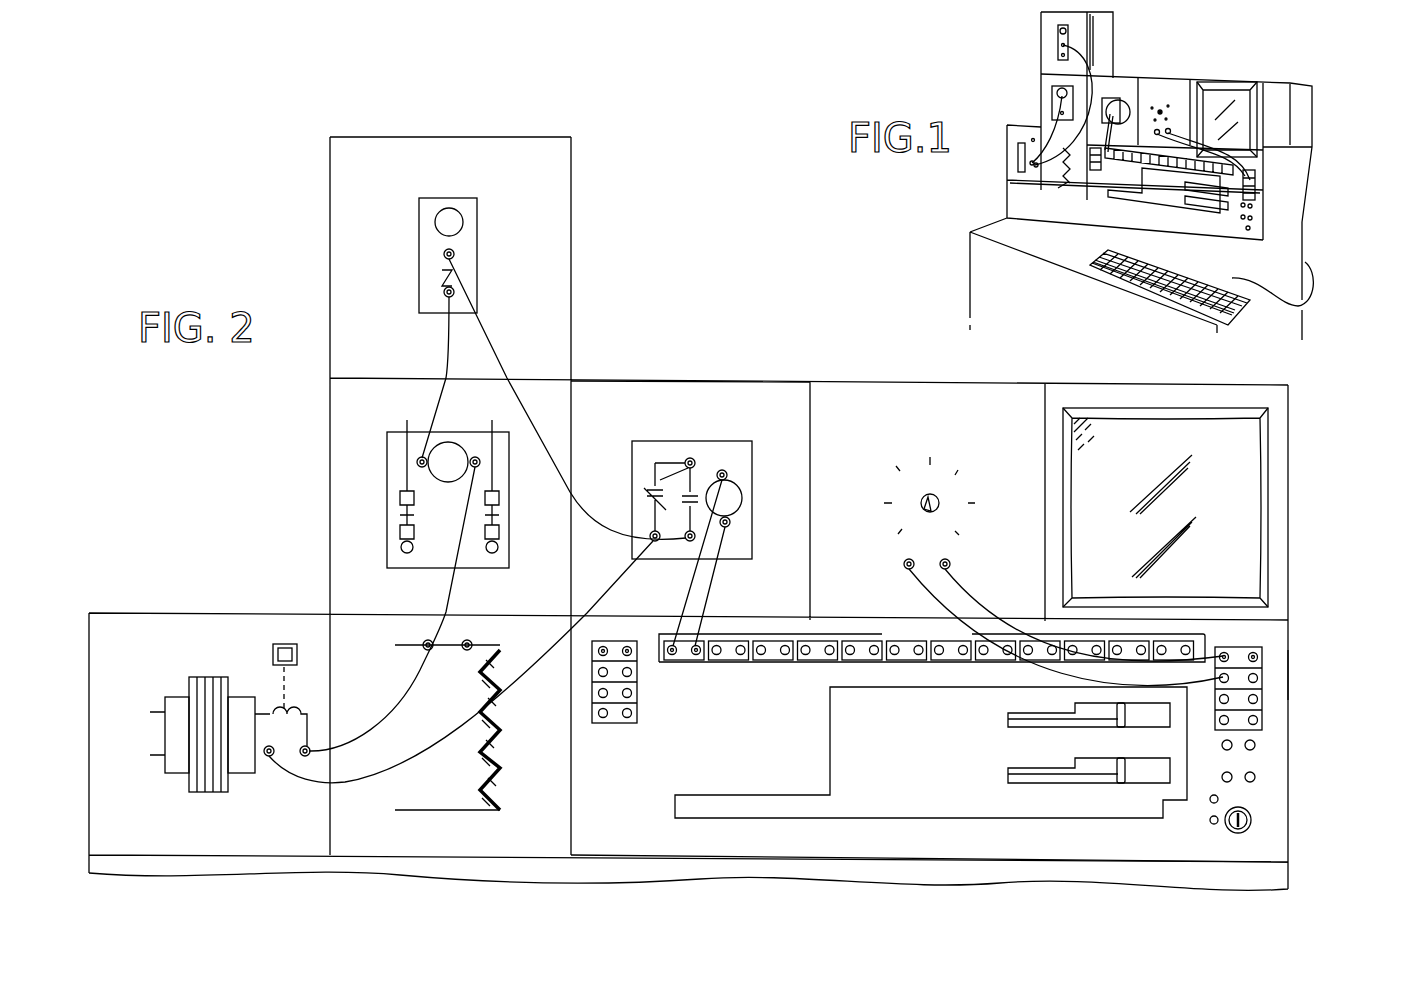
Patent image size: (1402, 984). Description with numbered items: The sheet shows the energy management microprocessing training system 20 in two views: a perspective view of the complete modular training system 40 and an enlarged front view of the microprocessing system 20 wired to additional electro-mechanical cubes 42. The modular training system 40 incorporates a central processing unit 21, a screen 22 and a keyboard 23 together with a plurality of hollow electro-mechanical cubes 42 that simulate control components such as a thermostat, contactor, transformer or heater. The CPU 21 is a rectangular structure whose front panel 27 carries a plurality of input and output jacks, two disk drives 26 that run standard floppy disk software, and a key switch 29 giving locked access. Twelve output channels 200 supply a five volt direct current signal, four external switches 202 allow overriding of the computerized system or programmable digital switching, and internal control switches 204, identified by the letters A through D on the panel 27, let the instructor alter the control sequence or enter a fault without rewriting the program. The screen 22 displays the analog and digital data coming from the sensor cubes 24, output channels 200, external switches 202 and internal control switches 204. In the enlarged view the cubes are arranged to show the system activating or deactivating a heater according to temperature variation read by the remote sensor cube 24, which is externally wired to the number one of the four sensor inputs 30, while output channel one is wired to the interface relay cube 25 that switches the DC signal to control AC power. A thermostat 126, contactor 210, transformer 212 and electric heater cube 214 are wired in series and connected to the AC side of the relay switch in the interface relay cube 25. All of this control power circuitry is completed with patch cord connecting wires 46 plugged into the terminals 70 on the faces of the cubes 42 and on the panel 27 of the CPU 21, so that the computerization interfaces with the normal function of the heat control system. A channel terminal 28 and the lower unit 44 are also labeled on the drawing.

In FIG. 1, the energy management microprocessing training system 20 is at (1138, 67).
In FIG. 2, the energy management microprocessing training system 20 is at (818, 369).
In FIG. 1, the central processing unit 21 is at (1164, 176).
In FIG. 2, the central processing unit 21 is at (1289, 692).
In FIG. 1, the screen 22 is at (1303, 118).
In FIG. 2, the screen 22 is at (1283, 442).
In FIG. 1, the keyboard 23 is at (1240, 295).
In FIG. 1, the remote sensor cube 24 is at (1185, 87).
In FIG. 2, the remote sensor cube 24 is at (1022, 397).
In FIG. 1, the interface relay cube 25 is at (1118, 75).
In FIG. 2, the interface relay cube 25 is at (652, 390).
In FIG. 1, the disk drives 26 is at (1188, 200).
In FIG. 2, the disk drives 26 is at (1005, 773).
In FIG. 1, the front panel 27 is at (1093, 195).
In FIG. 2, the front panel 27 is at (1289, 652).
In FIG. 2, the channel terminals 28 is at (650, 679).
In FIG. 2, the key switch 29 is at (1252, 811).
In FIG. 2, the sensor inputs 30 is at (1292, 703).
In FIG. 1, the modular training system 40 is at (984, 175).
In FIG. 2, the modular training system 40 is at (755, 302).
In FIG. 2, the electro-mechanical cubes 42 is at (255, 457).
In FIG. 1, the energy management microprocessing unit 44 is at (1009, 200).
In FIG. 2, the energy management microprocessing unit 44 is at (1275, 876).
In FIG. 2, the patch cord connecting wires 46 is at (362, 786).
In FIG. 2, the terminals 70 is at (444, 254).
In FIG. 1, the thermostat 126 is at (1047, 30).
In FIG. 2, the thermostat 126 is at (573, 266).
In FIG. 2, the output channels 200 is at (796, 664).
In FIG. 2, the external switches 202 is at (598, 714).
In FIG. 2, the internal control switches 204 is at (1220, 773).
In FIG. 1, the contactor 210 is at (1047, 86).
In FIG. 2, the contactor 210 is at (336, 403).
In FIG. 1, the transformer 212 is at (1009, 128).
In FIG. 2, the transformer 212 is at (196, 625).
In FIG. 1, the electric heater cube 214 is at (1055, 190).
In FIG. 2, the electric heater cube 214 is at (338, 623).